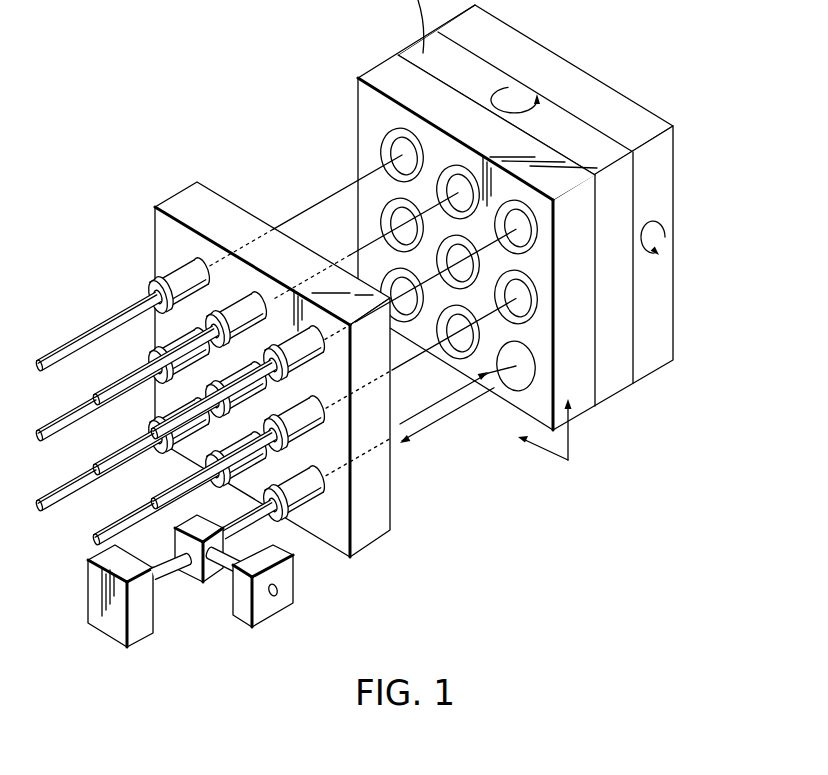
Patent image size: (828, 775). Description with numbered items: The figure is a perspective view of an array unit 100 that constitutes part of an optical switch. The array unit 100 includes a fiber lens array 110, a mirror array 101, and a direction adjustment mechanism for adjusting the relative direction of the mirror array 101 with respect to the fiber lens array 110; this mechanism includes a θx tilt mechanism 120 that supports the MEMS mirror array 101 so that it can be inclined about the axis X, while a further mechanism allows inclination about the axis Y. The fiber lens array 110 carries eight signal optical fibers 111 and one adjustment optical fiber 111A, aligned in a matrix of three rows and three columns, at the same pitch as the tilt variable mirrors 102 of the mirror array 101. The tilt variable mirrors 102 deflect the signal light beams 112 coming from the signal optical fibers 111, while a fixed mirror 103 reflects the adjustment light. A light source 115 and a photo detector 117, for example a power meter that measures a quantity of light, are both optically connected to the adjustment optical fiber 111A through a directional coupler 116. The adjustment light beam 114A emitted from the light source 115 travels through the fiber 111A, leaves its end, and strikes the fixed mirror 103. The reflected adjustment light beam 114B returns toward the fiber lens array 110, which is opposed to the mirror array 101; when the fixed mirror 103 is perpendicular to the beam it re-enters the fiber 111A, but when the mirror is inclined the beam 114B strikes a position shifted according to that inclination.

The array unit 100 is at (222, 68).
The mirror array 101 is at (388, 68).
The tilt variable mirrors 102 is at (384, 140).
The fixed mirror 103 is at (538, 358).
The fiber lens array 110 is at (383, 498).
The signal optical fibers 111 is at (88, 335).
The adjustment optical fiber 111A is at (268, 520).
The signal light beams 112 is at (294, 212).
The adjustment light beam 114A is at (463, 389).
The reflected adjustment light beam 114B is at (440, 420).
The light source 115 is at (108, 618).
The directional coupler 116 is at (193, 570).
The photo detector 117 is at (243, 613).
The θx tilt mechanism 120 is at (655, 360).